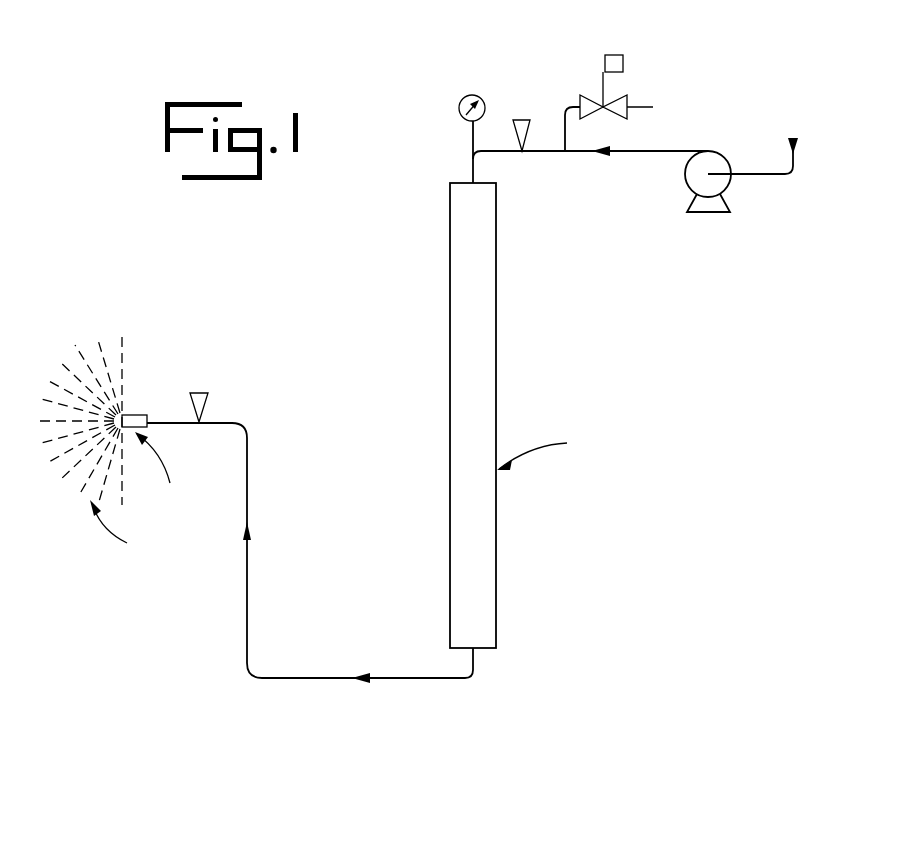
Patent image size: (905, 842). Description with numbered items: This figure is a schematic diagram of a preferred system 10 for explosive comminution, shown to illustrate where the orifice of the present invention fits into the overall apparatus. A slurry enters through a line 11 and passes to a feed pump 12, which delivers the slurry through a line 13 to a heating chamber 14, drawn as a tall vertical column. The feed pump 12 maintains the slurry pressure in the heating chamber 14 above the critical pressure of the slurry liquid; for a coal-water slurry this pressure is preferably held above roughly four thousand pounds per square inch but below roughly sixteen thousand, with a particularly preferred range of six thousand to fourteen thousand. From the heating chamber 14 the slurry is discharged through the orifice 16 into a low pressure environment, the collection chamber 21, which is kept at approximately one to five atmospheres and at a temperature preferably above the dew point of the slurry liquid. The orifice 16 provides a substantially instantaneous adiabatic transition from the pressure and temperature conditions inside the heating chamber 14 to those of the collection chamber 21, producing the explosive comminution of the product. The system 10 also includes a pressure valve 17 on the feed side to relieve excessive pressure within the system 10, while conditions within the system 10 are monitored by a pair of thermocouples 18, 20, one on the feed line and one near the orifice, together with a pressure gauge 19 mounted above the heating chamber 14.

The system 10 is at (572, 552).
The line 11 is at (793, 162).
The feed pump 12 is at (727, 190).
The line 13 is at (642, 153).
The heating chamber 14 is at (496, 342).
The orifice 16 is at (135, 427).
The pressure valve 17 is at (627, 98).
The thermocouple 18 is at (515, 118).
The pressure gauge 19 is at (458, 100).
The thermocouple 20 is at (208, 403).
The collection chamber 21 is at (72, 350).